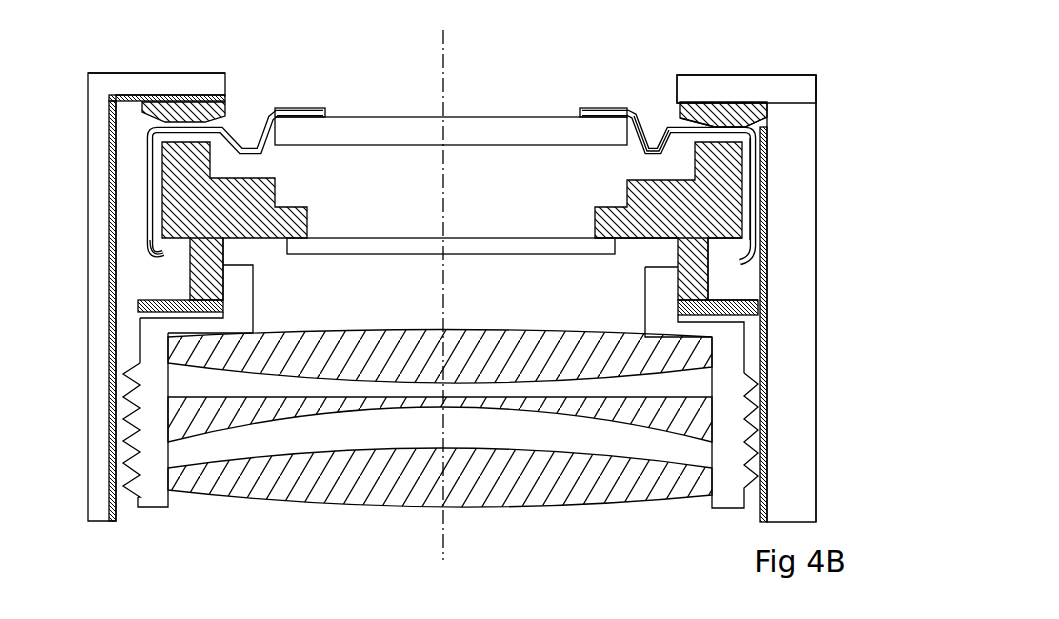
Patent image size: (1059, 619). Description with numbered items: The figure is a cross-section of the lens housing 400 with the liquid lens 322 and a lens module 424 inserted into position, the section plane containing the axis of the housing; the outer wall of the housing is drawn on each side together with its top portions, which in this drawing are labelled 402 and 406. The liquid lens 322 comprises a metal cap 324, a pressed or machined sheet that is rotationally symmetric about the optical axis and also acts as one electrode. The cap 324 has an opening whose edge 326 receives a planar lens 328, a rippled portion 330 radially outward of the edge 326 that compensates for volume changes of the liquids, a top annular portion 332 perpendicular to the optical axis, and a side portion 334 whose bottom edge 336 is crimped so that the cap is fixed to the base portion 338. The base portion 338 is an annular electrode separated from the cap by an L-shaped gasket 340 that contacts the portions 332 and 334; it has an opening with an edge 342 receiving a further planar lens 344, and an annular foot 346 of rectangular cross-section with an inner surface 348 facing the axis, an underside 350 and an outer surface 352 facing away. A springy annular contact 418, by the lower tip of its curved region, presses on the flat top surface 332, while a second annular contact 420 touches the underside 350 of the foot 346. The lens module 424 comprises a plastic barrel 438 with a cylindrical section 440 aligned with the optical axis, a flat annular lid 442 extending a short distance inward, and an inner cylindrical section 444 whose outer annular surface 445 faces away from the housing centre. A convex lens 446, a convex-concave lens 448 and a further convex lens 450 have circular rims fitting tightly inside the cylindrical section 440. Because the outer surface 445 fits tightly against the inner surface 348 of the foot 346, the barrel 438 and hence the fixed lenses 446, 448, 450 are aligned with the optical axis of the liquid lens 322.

The liquid lens 322 is at (292, 101).
The metal cap 324 is at (640, 148).
The edge 326 is at (596, 108).
The planar lens 328 is at (467, 128).
The rippled portion 330 is at (666, 112).
The top annular portion 332 is at (717, 112).
The side portion 334 is at (757, 183).
The bottom edge 336 is at (758, 264).
The base portion 338 is at (257, 193).
The L-shaped gasket 340 is at (743, 160).
The edge 342 is at (633, 241).
The further planar lens 344 is at (500, 243).
The annular foot 346 is at (733, 269).
The inner surface 348 is at (223, 252).
The underside 350 is at (203, 288).
The outer surface 352 is at (190, 262).
The lens housing 400 is at (769, 60).
The housing 402 is at (797, 210).
The housing top flange 406 is at (709, 92).
The annular contact 418 is at (678, 104).
The annular contact 420 is at (113, 294).
The lens module 424 is at (132, 337).
The barrel 438 is at (265, 320).
The cylindrical section 440 is at (153, 403).
The flat annular lid 442 is at (678, 332).
The inner cylindrical section 444 is at (242, 290).
The outer annular surface 445 is at (678, 284).
The convex lens 446 is at (468, 350).
The convex-concave lens 448 is at (554, 405).
The further convex lens 450 is at (340, 456).